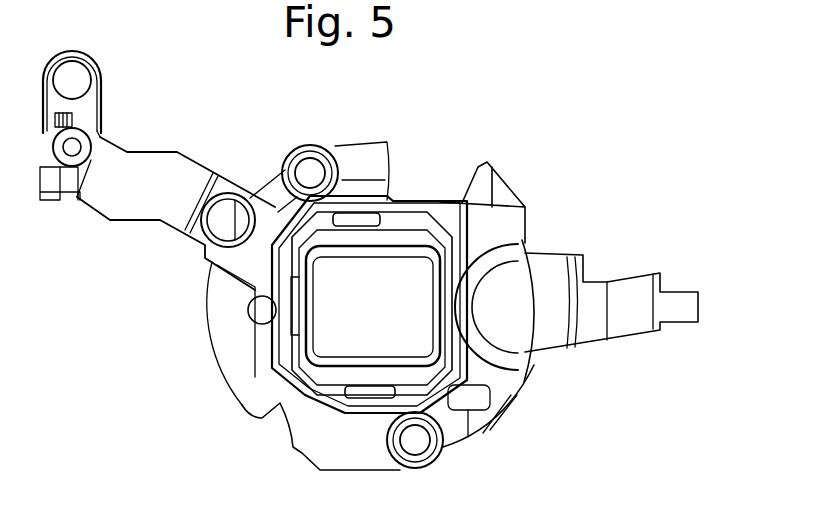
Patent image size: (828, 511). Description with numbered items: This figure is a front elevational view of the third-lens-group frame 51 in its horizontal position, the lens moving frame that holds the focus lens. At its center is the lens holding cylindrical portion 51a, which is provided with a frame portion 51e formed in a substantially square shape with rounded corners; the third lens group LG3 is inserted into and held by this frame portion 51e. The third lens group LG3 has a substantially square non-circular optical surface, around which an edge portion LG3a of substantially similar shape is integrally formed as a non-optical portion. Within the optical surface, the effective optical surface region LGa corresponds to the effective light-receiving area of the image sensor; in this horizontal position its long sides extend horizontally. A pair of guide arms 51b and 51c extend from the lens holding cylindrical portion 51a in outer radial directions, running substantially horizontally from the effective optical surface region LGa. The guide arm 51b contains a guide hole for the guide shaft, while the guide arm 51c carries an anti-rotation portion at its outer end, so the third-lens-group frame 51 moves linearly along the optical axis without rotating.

The third-lens-group frame 51 is at (397, 110).
The lens holding cylindrical portion 51a is at (505, 220).
The guide arm 51b is at (150, 165).
The guide arm 51c is at (633, 288).
The frame portion 51e is at (388, 234).
The third lens group LG3 is at (333, 362).
The edge portion LG3a is at (332, 378).
The effective optical surface region LGa is at (402, 353).